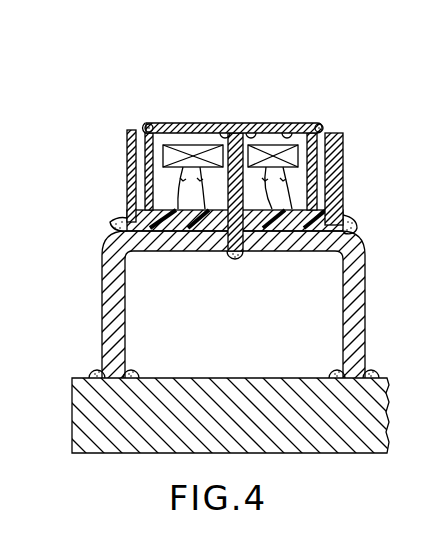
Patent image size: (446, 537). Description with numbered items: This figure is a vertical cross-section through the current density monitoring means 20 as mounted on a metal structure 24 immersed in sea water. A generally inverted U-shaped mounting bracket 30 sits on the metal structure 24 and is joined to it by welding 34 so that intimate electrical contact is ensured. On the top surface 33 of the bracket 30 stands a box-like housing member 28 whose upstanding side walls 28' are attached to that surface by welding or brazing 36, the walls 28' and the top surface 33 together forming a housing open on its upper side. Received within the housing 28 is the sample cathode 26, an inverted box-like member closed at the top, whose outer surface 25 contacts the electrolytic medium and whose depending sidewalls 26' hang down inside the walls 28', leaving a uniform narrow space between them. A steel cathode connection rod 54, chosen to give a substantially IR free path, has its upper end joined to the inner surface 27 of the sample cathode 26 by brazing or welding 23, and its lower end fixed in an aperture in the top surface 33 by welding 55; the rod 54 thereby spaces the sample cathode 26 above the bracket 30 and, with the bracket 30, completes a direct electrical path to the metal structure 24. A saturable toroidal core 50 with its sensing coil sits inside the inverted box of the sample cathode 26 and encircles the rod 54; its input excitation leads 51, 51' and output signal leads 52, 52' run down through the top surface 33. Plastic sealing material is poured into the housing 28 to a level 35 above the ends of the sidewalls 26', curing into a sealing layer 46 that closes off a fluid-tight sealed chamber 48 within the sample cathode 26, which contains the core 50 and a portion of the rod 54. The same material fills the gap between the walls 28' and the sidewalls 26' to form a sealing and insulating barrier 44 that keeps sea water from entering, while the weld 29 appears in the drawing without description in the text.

The current density monitoring means 20 is at (321, 103).
The brazing or welding 23 is at (262, 132).
The metal structure 24 is at (273, 377).
The surface 25 is at (225, 122).
The sample cathode 26 is at (223, 147).
The depending sidewalls 26' is at (261, 96).
The inner surface 27 is at (292, 132).
The housing member 28 is at (223, 186).
The side walls 28' is at (223, 186).
The weld 29 is at (145, 119).
The mounting bracket 30 is at (368, 280).
The top surface 33 is at (319, 233).
The welding 34 is at (142, 369).
The level 35 is at (338, 176).
The welding or brazing 36 is at (366, 223).
The sealing and insulating barrier 44 is at (345, 140).
The sealing layer 46 is at (116, 222).
The sealed chamber 48 is at (145, 193).
The saturable toroidal core 50 is at (200, 127).
The input excitation lead 51 is at (269, 256).
The input excitation lead 51' is at (294, 225).
The output signal lead 52 is at (156, 243).
The output signal lead 52' is at (183, 233).
The cathode connection rod 54 is at (224, 247).
The welding 55 is at (237, 259).